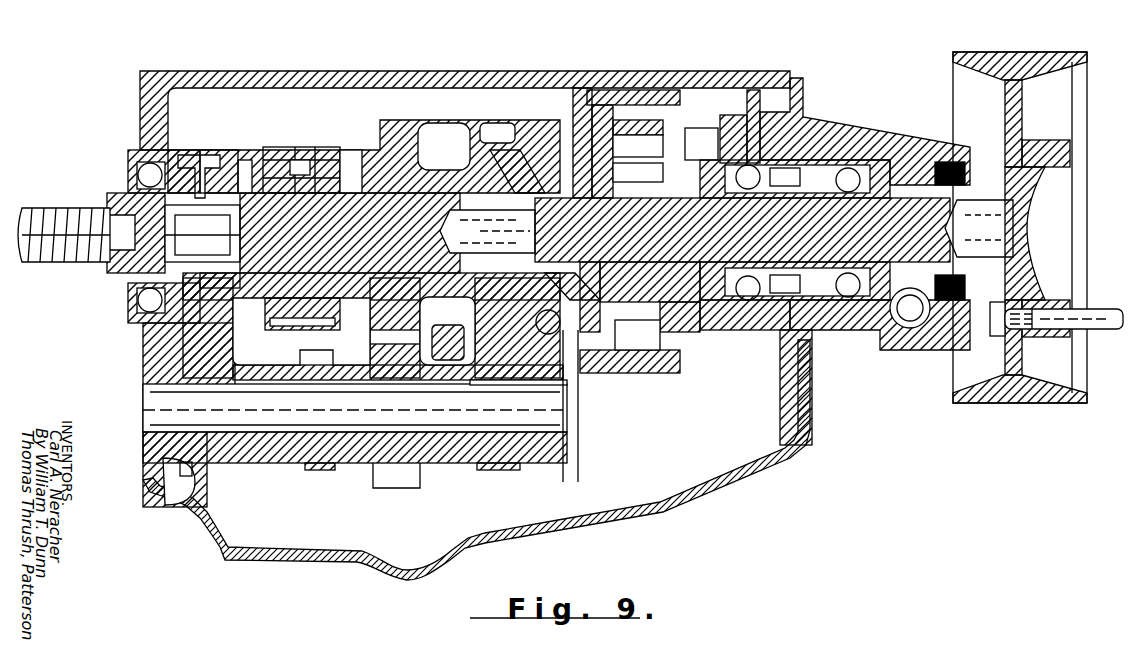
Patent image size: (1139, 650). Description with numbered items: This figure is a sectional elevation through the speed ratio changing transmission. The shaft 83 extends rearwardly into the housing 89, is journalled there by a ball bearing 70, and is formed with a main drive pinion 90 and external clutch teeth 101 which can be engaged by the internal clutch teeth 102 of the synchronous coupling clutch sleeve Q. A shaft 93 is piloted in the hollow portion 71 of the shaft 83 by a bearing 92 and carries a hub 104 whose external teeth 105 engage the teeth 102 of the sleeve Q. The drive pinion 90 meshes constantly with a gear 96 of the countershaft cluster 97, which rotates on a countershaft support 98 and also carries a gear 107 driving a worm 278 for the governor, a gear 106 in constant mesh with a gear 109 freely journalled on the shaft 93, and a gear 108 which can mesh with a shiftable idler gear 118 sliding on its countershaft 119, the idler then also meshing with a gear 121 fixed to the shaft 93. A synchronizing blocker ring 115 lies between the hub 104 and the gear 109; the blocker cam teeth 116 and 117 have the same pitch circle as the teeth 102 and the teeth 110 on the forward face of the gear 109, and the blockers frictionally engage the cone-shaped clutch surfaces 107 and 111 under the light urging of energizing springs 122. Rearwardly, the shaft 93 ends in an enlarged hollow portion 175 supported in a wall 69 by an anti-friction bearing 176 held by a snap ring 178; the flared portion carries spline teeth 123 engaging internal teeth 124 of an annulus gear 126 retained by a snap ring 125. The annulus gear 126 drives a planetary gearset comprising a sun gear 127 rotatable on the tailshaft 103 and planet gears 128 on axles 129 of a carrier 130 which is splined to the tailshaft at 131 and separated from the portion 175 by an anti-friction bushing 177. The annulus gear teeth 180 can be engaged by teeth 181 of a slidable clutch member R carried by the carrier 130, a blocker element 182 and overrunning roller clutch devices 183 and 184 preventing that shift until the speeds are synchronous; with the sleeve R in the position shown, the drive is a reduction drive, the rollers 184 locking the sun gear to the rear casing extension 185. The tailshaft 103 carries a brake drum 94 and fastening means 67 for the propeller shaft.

The fastening means 67 is at (1084, 313).
The wall 69 is at (530, 121).
The ball bearing 70 is at (129, 305).
The hollow portion 71 is at (136, 233).
The shaft 83 is at (84, 206).
The housing 89 is at (671, 500).
The main drive pinion 90 is at (187, 152).
The bearing 92 is at (202, 233).
The intermediate transmission driven shaft 93 is at (396, 240).
The brake drum 94 is at (998, 52).
The gear 96 is at (236, 498).
The countershaft cluster 97 is at (273, 368).
The countershaft support 98 is at (353, 413).
The external clutch teeth 101 is at (242, 163).
The internal clutch teeth 102 is at (283, 147).
The tailshaft 103 is at (868, 226).
The hub 104 is at (308, 236).
The external teeth 105 is at (300, 209).
The gear 106 is at (374, 478).
The gear / cone-shaped clutch surface 107 is at (286, 474).
The gear 108 is at (493, 468).
The gear 109 is at (418, 135).
The teeth 110 is at (367, 150).
The cone-shaped clutch surface 111 is at (370, 177).
The synchronizing blocker ring 115 is at (371, 325).
The cam teeth 116 is at (244, 158).
The cam teeth 117 is at (353, 150).
The shiftable idler gear 118 is at (459, 334).
The countershaft 119 is at (240, 285).
The gear 121 is at (505, 122).
The energizing springs 122 is at (312, 159).
The spline teeth 123 is at (586, 379).
The internal teeth 124 is at (635, 352).
The snap ring 125 is at (608, 119).
The annulus gear 126 is at (626, 88).
The sun gear 127 is at (641, 200).
The planet gears 128 is at (638, 146).
The axles 129 is at (638, 172).
The carrier 130 is at (662, 302).
The spline 131 is at (537, 233).
The enlarged hollow portion 175 is at (571, 134).
The anti-friction bearing 176 is at (517, 150).
The anti-friction bushing 177 is at (562, 198).
The snap ring 178 is at (553, 387).
The teeth 180 is at (694, 94).
The teeth 181 is at (694, 100).
The blocker element 182 is at (701, 144).
The overrunning roller clutch device 183 is at (715, 198).
The overrunning roller clutch device 184 is at (806, 196).
The rear casing extension 185 is at (885, 146).
The worm 278 is at (311, 475).
The synchronous coupling clutch sleeve Q is at (336, 147).
The slidable clutch member R is at (730, 100).